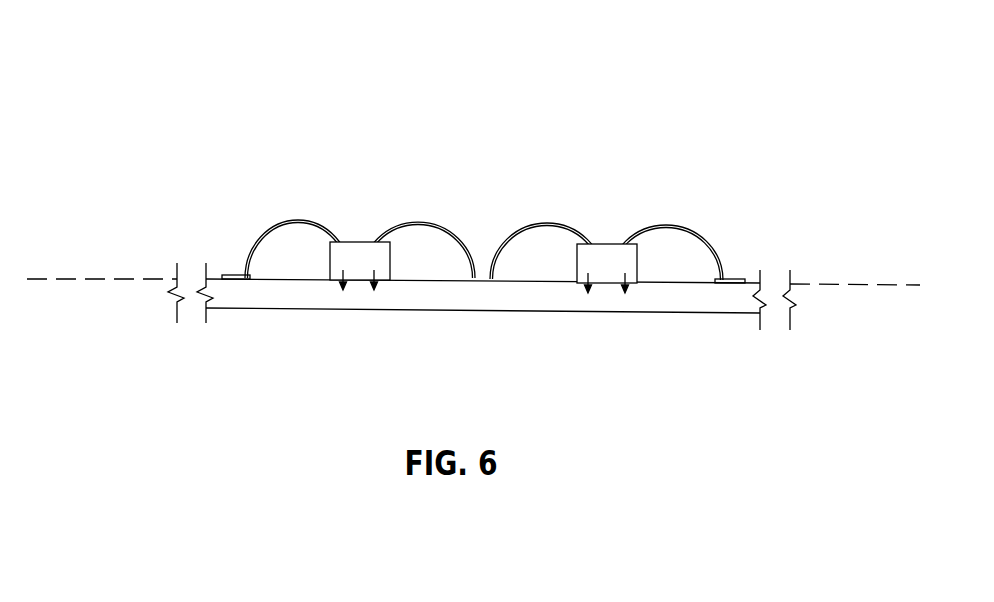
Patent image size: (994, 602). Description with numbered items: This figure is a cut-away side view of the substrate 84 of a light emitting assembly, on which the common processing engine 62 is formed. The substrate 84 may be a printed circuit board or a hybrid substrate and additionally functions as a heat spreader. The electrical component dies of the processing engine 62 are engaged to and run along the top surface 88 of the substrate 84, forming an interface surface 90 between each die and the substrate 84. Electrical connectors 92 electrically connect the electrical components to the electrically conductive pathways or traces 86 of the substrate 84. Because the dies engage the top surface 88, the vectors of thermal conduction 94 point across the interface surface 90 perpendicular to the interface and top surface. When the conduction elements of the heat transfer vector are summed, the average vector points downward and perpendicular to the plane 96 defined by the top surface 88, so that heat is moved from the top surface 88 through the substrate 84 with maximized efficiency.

The substrate 84 is at (250, 95).
The traces 86 is at (233, 274).
The top surface 88 is at (751, 283).
The common processing engine 62 is at (392, 243).
The electrical connectors 92 is at (307, 220).
The interface surface 90 is at (366, 280).
The vectors of thermal conduction 94 is at (374, 286).
The plane 96 is at (842, 286).